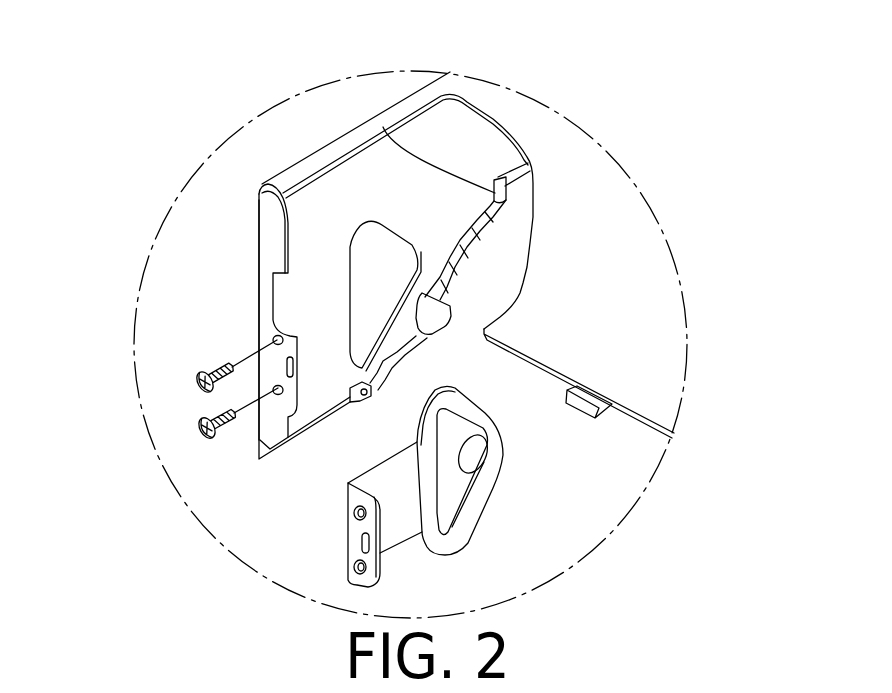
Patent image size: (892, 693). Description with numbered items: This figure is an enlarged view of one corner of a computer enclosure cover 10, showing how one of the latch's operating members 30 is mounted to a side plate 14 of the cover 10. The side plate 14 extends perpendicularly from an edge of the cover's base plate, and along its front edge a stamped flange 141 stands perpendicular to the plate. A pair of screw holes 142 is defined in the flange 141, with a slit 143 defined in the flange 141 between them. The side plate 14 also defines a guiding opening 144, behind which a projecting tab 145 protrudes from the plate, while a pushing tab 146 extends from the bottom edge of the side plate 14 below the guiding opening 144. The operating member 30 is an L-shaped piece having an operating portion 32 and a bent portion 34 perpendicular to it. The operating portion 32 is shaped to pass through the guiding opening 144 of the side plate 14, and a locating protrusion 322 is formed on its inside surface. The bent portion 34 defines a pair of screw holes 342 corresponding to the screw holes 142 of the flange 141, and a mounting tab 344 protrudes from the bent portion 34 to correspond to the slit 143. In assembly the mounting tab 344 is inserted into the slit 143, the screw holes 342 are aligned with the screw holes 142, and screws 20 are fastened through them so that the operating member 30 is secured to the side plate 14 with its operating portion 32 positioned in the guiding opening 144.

The cover 10 is at (607, 208).
The side plate 14 is at (292, 239).
The flange 141 is at (267, 310).
The screw holes 142 is at (277, 340).
The slit 143 is at (277, 390).
The guiding opening 144 is at (363, 267).
The projecting tab 145 is at (383, 127).
The pushing tab 146 is at (366, 395).
The screws 20 is at (197, 378).
The operating member 30 is at (387, 494).
The operating portion 32 is at (467, 478).
The locating protrusion 322 is at (475, 447).
The bent portion 34 is at (284, 542).
The screw holes 342 is at (355, 511).
The mounting tab 344 is at (364, 545).